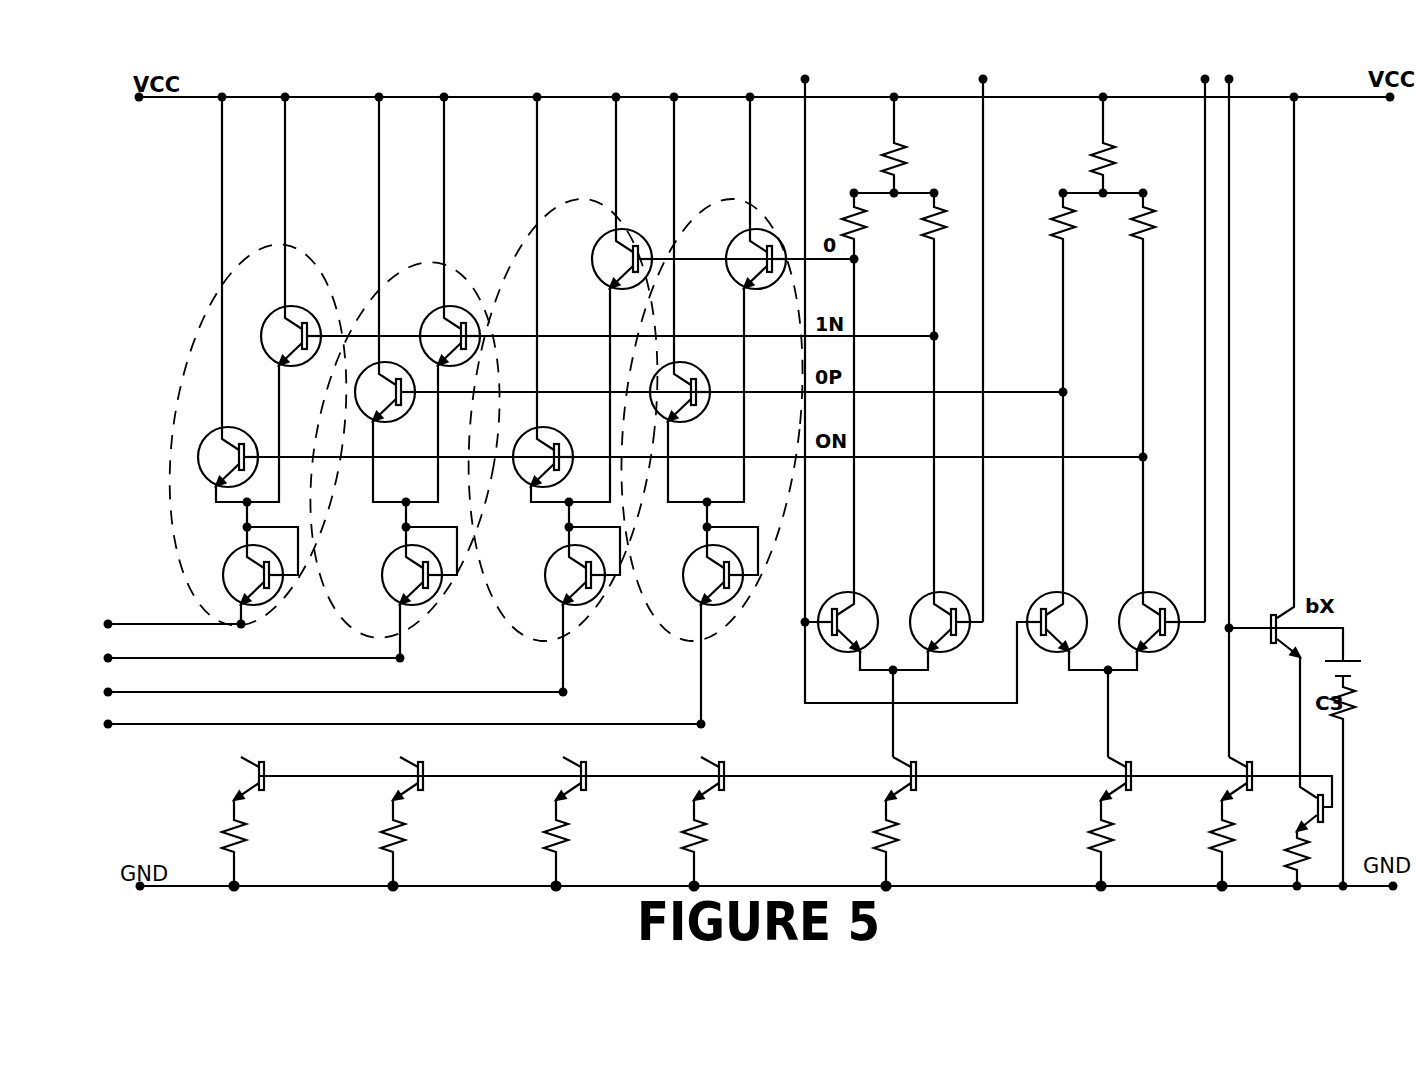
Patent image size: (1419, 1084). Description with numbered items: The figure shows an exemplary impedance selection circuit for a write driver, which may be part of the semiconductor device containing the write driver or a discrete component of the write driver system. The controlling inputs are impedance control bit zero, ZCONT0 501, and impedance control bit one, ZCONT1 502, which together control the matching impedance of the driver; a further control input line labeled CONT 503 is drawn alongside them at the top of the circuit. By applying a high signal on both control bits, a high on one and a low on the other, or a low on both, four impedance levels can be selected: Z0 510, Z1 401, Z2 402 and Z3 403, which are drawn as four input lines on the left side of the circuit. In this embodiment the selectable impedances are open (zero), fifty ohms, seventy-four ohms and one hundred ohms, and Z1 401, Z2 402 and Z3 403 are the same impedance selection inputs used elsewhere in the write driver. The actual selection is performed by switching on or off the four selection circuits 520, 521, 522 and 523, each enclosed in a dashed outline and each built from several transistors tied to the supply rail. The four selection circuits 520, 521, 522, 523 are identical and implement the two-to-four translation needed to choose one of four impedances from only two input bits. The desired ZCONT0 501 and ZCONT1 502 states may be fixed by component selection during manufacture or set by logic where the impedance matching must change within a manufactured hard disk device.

The selection circuit 520 is at (332, 299).
The selection circuit 521 is at (494, 299).
The selection circuit 522 is at (590, 299).
The selection circuit 523 is at (727, 299).
The impedance level Z0 510 is at (175, 615).
The impedance selection input Z1 401 is at (254, 649).
The impedance selection input Z2 402 is at (336, 683).
The impedance selection input Z3 403 is at (405, 715).
The impedance control bit 0 (ZCONT0) 501 is at (983, 79).
The impedance control bit 1 (ZCONT1) 502 is at (1205, 79).
The control signal 1Z CONT 503 is at (1229, 79).